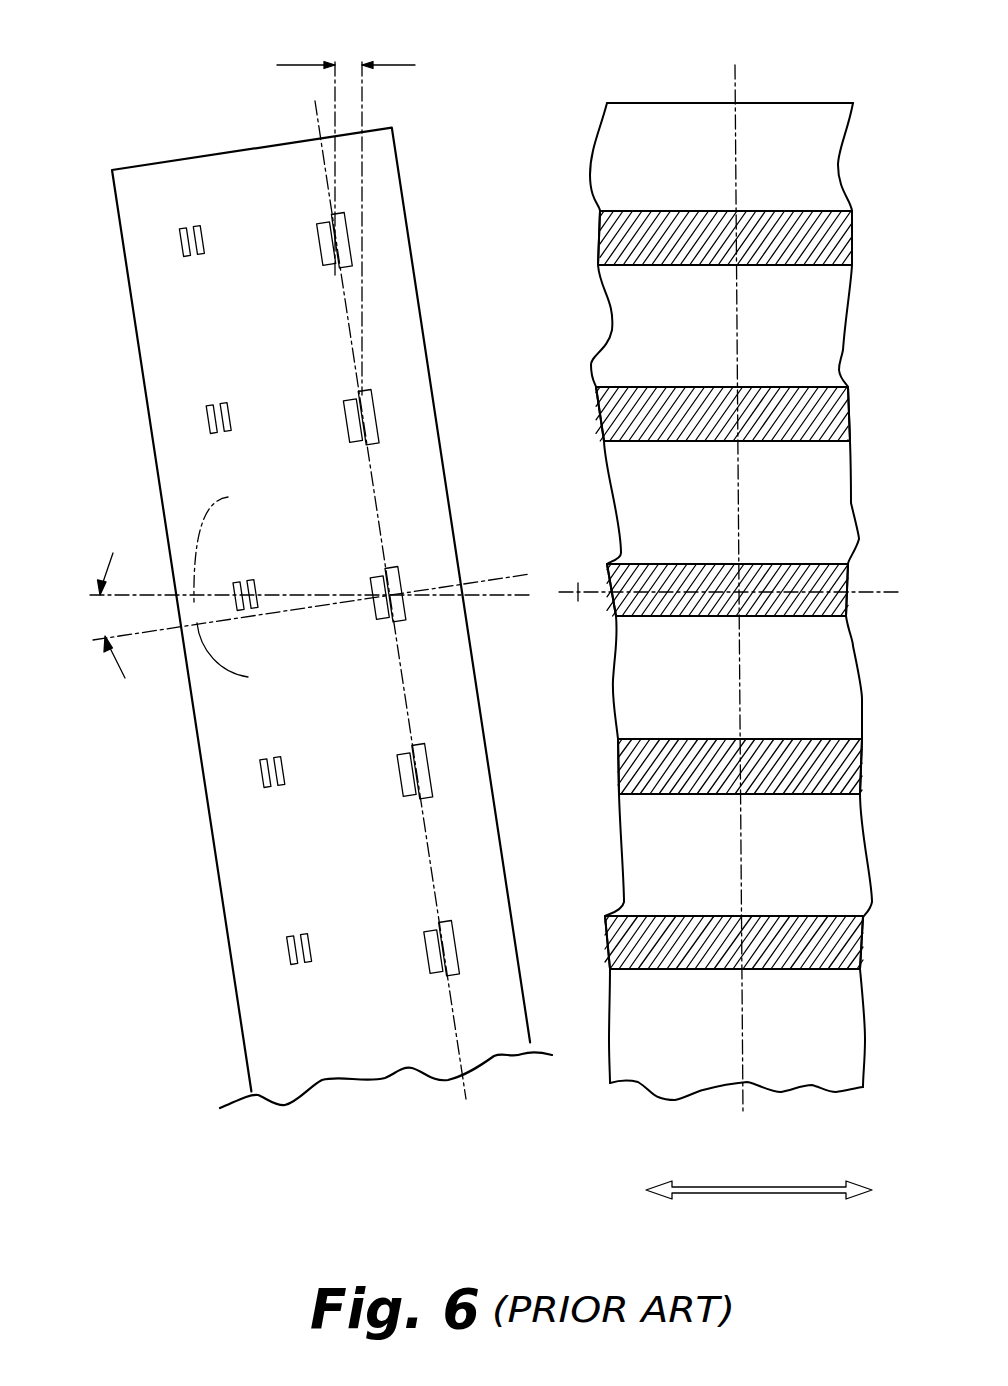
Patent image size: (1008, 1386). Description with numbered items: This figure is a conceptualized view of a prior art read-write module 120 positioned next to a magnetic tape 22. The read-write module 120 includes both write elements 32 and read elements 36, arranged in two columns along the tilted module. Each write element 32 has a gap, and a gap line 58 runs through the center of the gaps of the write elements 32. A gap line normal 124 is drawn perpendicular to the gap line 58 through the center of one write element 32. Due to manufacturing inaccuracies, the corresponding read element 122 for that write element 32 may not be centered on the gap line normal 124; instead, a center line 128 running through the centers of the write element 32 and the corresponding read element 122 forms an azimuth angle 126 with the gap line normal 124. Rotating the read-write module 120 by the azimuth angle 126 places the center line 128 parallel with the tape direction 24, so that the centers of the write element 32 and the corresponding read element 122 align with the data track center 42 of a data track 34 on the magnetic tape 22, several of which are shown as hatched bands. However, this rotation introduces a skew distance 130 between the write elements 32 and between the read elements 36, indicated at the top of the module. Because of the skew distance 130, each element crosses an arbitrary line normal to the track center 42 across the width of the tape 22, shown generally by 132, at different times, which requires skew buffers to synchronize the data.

The read-write module 120 is at (168, 160).
The skew distance 130 is at (305, 63).
The gap line 58 is at (427, 847).
The write element 32 is at (394, 552).
The corresponding read element 122 is at (246, 570).
The read element 36 is at (305, 980).
The center line 128 is at (234, 540).
The gap line normal 124 is at (252, 678).
The azimuth angle 126 is at (115, 668).
The magnetic tape 22 is at (808, 103).
The data track 34 is at (632, 265).
The data track center 42 is at (578, 601).
The line normal to track center 132 is at (743, 884).
The tape direction 24 is at (788, 1193).